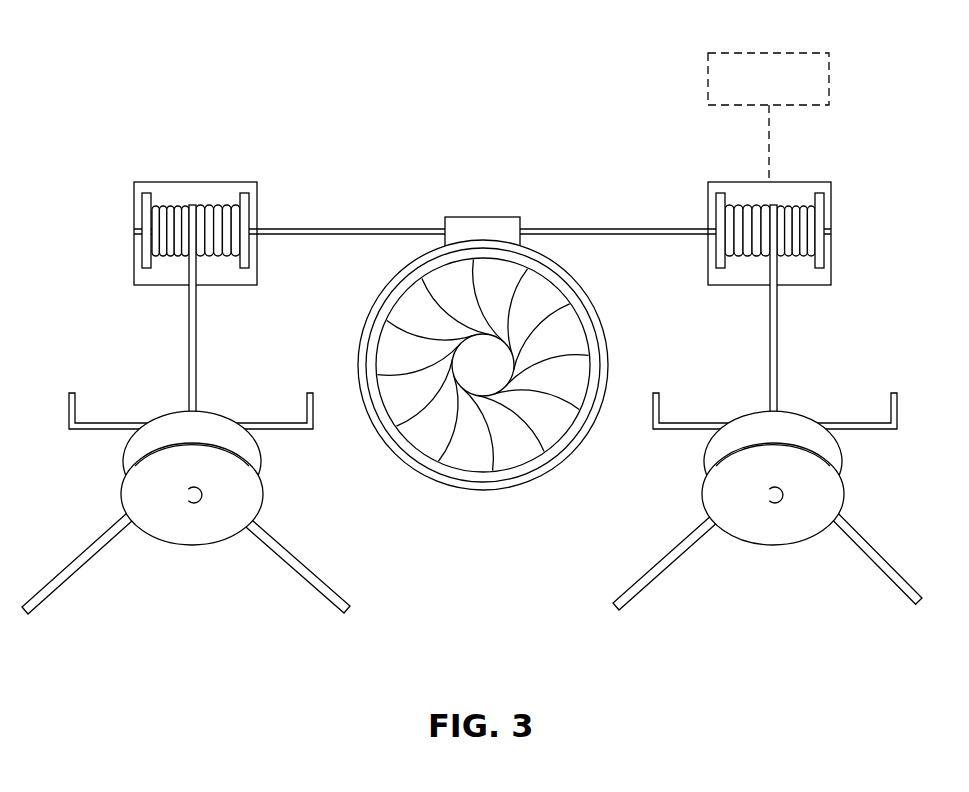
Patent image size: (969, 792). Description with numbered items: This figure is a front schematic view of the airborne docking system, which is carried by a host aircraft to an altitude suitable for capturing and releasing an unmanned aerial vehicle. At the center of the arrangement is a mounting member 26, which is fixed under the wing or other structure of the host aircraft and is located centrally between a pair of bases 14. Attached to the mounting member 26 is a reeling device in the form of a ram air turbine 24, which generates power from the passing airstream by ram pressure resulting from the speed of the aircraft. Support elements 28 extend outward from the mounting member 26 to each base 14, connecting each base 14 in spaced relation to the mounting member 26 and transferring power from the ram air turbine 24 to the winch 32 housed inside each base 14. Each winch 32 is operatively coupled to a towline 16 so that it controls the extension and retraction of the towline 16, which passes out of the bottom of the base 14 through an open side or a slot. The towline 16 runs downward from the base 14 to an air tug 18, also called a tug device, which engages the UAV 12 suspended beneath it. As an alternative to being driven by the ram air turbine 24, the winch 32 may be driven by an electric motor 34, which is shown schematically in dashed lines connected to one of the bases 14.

The UAV 12 is at (162, 561).
The base 14 is at (139, 160).
The towline 16 is at (189, 318).
The air tug 18 is at (150, 402).
The ram air turbine 24 is at (455, 504).
The mounting member 26 is at (485, 217).
The support elements 28 is at (333, 228).
The winch 32 is at (146, 204).
The electric motor 34 is at (797, 54).